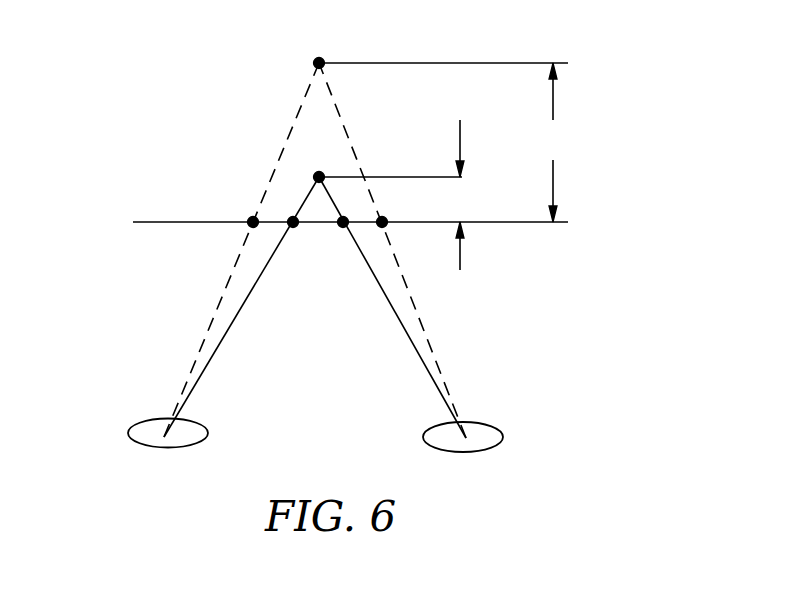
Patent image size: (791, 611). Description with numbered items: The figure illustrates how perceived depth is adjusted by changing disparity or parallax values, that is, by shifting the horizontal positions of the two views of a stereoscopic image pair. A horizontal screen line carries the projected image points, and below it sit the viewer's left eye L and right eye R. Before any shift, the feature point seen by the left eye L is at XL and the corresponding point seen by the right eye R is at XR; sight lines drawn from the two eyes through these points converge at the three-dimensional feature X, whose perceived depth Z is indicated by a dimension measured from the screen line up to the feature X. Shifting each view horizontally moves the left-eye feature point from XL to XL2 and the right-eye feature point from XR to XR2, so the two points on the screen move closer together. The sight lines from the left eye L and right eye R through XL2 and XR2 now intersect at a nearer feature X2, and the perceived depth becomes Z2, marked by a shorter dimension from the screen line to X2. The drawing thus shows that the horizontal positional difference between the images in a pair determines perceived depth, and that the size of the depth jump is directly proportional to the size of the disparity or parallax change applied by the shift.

The 3D feature X is at (321, 44).
The shifted 3D feature X2 is at (323, 157).
The feature point seen by the left eye XL is at (235, 204).
The corresponding point seen by the right eye XR is at (398, 209).
The shifted left-eye feature point XL2 is at (293, 229).
The shifted right-eye feature point XR2 is at (342, 229).
The perceived depth Z is at (443, 142).
The adjusted perceived depth Z2 is at (402, 195).
The left eye L is at (168, 456).
The right eye R is at (463, 458).